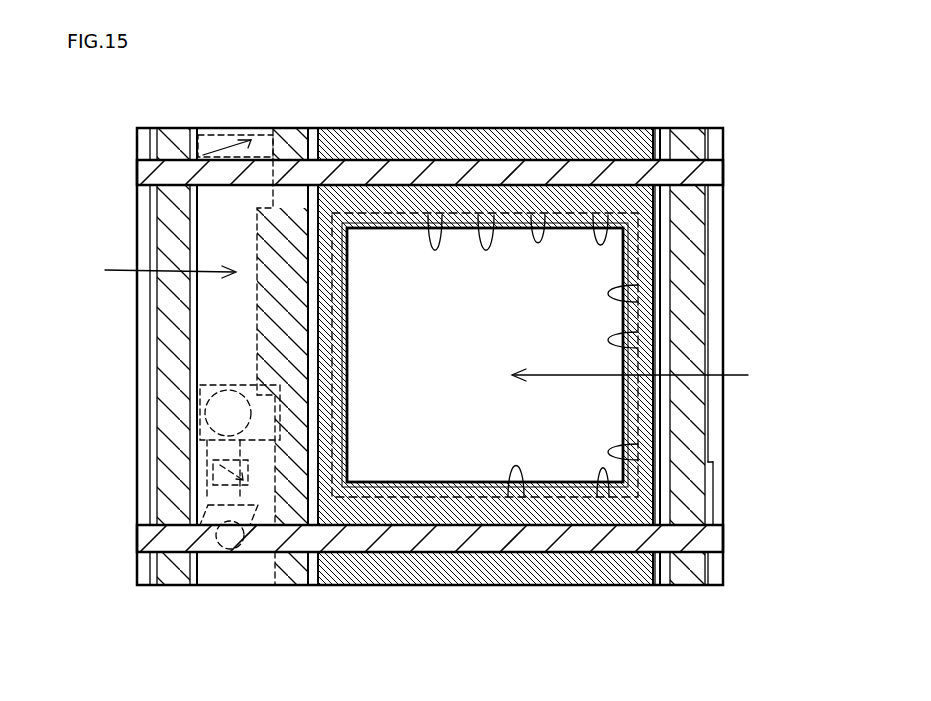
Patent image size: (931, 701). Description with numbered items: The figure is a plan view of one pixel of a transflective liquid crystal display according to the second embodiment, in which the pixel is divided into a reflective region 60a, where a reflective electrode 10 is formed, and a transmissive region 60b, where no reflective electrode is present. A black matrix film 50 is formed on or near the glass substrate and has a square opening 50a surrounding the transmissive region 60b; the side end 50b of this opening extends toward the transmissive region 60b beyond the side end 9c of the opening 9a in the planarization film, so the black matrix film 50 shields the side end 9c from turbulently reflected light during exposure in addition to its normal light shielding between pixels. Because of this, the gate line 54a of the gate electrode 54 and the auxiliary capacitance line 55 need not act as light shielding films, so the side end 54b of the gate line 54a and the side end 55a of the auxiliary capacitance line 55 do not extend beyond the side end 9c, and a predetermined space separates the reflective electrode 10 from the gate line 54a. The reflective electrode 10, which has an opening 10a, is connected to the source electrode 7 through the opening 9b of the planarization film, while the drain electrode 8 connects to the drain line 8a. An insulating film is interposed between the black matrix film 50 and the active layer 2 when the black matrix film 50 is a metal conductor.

The active layer 2 is at (194, 452).
The source electrode 7 is at (165, 412).
The opening 9b is at (205, 426).
The drain electrode 8 is at (218, 553).
The drain line 8a is at (143, 182).
The opening 9a is at (545, 215).
The side end 9c is at (608, 215).
The reflective electrode 10 is at (187, 333).
The opening 10a is at (638, 444).
The black matrix film 50 is at (389, 210).
The opening 50a is at (442, 215).
The side end 50b is at (494, 215).
The gate electrode 54 is at (714, 472).
The gate line 54a is at (690, 235).
The side end 54b is at (652, 232).
The auxiliary capacitance line 55 is at (291, 228).
The side end 55a is at (316, 527).
The reflective region 60a is at (151, 269).
The transmissive region 60b is at (651, 375).